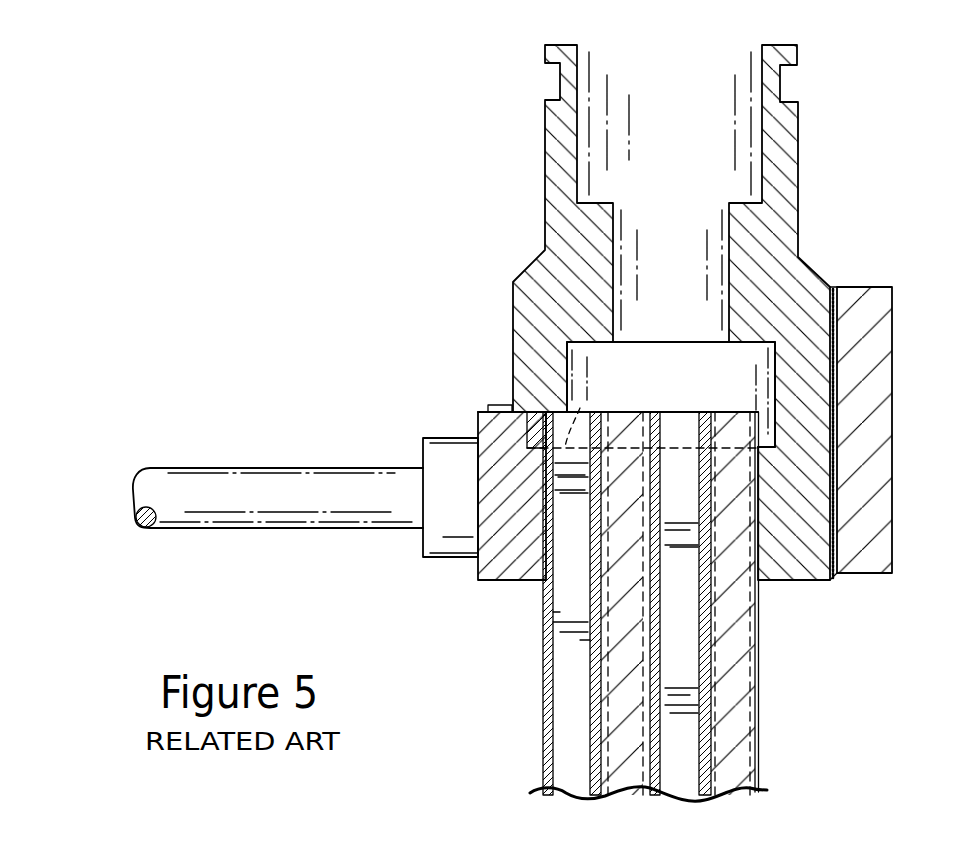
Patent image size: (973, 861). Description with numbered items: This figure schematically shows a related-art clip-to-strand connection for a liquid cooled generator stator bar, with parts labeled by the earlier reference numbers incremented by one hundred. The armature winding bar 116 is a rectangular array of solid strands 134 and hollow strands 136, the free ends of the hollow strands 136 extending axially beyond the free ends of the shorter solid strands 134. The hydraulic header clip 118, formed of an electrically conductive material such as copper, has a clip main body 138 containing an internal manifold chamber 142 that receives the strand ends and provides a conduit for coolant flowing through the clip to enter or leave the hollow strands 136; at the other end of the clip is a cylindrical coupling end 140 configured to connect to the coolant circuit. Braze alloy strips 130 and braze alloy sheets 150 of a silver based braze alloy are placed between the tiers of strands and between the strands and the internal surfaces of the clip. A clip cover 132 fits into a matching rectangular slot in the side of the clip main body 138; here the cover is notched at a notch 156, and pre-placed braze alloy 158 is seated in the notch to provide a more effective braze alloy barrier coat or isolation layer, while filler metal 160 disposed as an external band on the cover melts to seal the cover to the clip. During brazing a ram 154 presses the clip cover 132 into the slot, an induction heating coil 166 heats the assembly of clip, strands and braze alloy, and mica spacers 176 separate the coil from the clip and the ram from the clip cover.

The armature winding bar 116 is at (652, 804).
The hydraulic header clip 118 is at (817, 272).
The braze alloy strips 130 is at (598, 517).
The clip cover 132 is at (503, 503).
The solid strands 134 is at (585, 407).
The hollow strands 136 is at (727, 424).
The clip main body 138 is at (795, 368).
The cylindrical coupling end 140 is at (790, 125).
The internal manifold chamber 142 is at (608, 348).
The braze alloy sheets 150 is at (547, 582).
The ram 154 is at (183, 535).
The notch 156 is at (527, 414).
The pre-placed braze alloy 158 is at (497, 472).
The filler metal 160 is at (505, 407).
The induction heating coil 166 is at (877, 508).
The mica spacers 176 is at (835, 580).